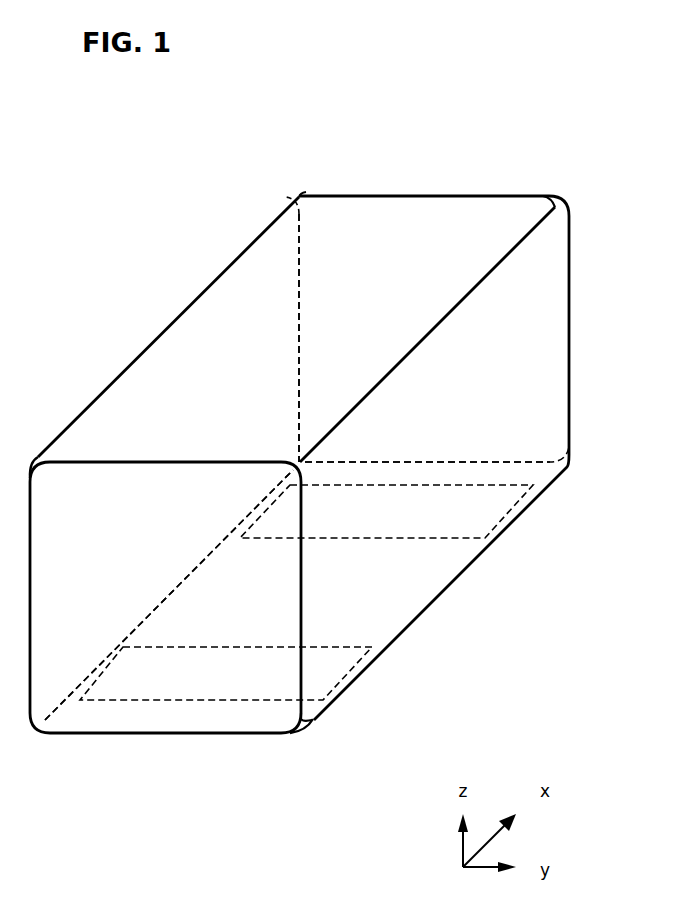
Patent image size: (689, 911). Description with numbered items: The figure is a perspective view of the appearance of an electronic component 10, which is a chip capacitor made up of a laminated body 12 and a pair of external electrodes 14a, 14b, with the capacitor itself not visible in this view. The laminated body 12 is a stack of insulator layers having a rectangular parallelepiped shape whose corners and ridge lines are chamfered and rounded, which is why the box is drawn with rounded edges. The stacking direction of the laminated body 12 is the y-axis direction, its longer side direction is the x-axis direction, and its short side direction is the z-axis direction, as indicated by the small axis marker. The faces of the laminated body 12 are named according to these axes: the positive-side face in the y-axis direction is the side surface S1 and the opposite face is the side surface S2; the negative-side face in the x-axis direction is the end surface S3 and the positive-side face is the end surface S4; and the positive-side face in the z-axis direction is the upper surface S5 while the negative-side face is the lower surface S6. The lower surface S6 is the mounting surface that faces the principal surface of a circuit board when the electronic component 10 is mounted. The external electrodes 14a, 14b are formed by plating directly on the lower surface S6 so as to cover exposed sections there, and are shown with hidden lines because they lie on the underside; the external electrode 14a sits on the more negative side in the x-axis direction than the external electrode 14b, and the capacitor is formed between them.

The electronic component 10 is at (100, 169).
The laminated body 12 is at (458, 182).
The external electrode 14a is at (338, 672).
The external electrode 14b is at (493, 510).
The side surface S1 is at (427, 525).
The side surface S2 is at (153, 394).
The end surface S3 is at (170, 633).
The end surface S4 is at (483, 223).
The upper surface S5 is at (240, 340).
The lower surface S6 is at (378, 592).